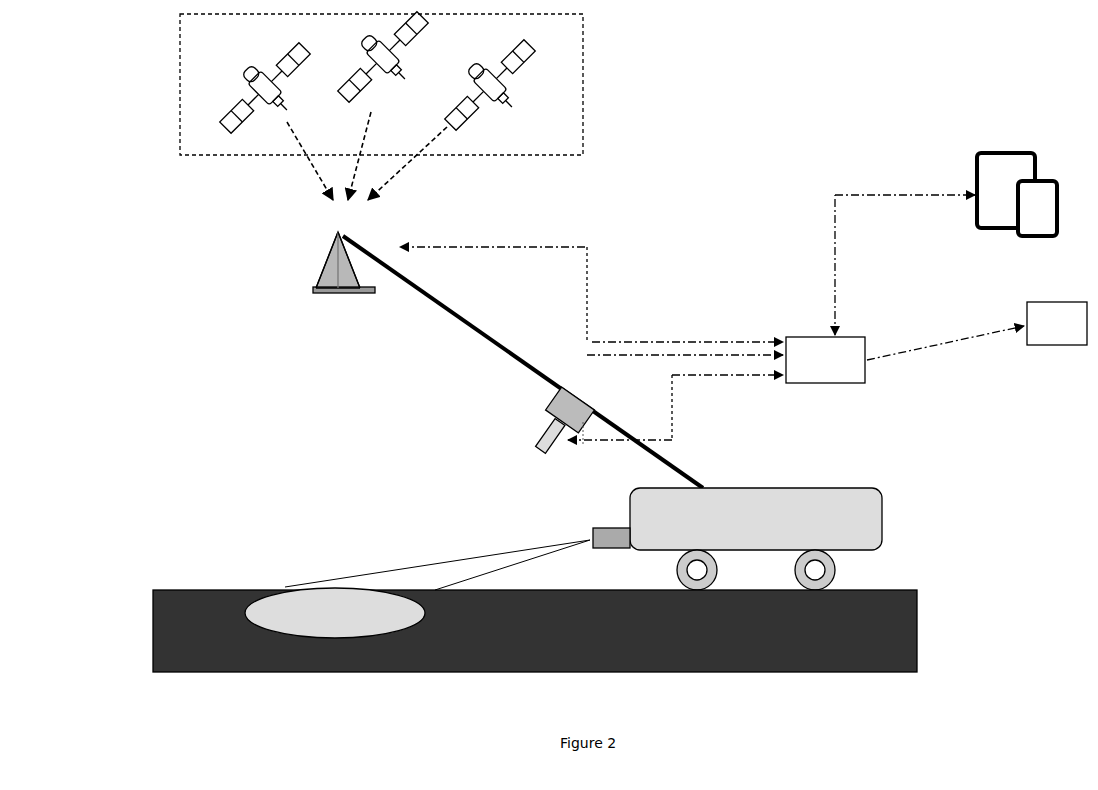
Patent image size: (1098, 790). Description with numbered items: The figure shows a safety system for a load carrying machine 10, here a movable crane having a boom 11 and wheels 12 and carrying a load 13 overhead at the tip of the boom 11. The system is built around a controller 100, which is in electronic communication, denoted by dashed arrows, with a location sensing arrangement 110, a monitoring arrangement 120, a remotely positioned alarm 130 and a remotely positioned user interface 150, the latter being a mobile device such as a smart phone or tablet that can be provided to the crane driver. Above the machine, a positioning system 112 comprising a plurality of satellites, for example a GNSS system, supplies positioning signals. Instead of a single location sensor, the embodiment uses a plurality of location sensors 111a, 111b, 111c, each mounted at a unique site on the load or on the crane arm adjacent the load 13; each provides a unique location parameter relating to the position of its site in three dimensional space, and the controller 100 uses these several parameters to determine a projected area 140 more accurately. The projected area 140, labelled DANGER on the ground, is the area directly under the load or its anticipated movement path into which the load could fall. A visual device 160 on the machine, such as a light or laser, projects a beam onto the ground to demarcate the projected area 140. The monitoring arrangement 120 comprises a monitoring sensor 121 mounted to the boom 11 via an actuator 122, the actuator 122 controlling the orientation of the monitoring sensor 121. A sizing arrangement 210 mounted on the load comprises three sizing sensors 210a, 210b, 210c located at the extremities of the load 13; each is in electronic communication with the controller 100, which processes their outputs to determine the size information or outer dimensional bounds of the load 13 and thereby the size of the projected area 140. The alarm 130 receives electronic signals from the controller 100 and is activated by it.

The load carrying machine 10 is at (888, 497).
The boom 11 is at (460, 322).
The wheels 12 is at (838, 572).
The load 13 is at (357, 278).
The controller 100 is at (905, 289).
The location sensing arrangement 110 is at (860, 465).
The location sensor 111a is at (333, 234).
The location sensor 111b is at (874, 476).
The location sensor 111c is at (566, 380).
The positioning system 112 is at (585, 84).
The monitoring arrangement 120 is at (508, 432).
The monitoring sensor 121 is at (546, 456).
The actuator 122 is at (583, 445).
The alarm 130 is at (1057, 323).
The projected area 140 is at (280, 590).
The user interface 150 is at (1017, 210).
The visual device 160 is at (590, 540).
The sizing arrangement 210 is at (302, 298).
The sizing sensor 210a is at (316, 296).
The sizing sensor 210b is at (337, 296).
The sizing sensor 210c is at (364, 296).